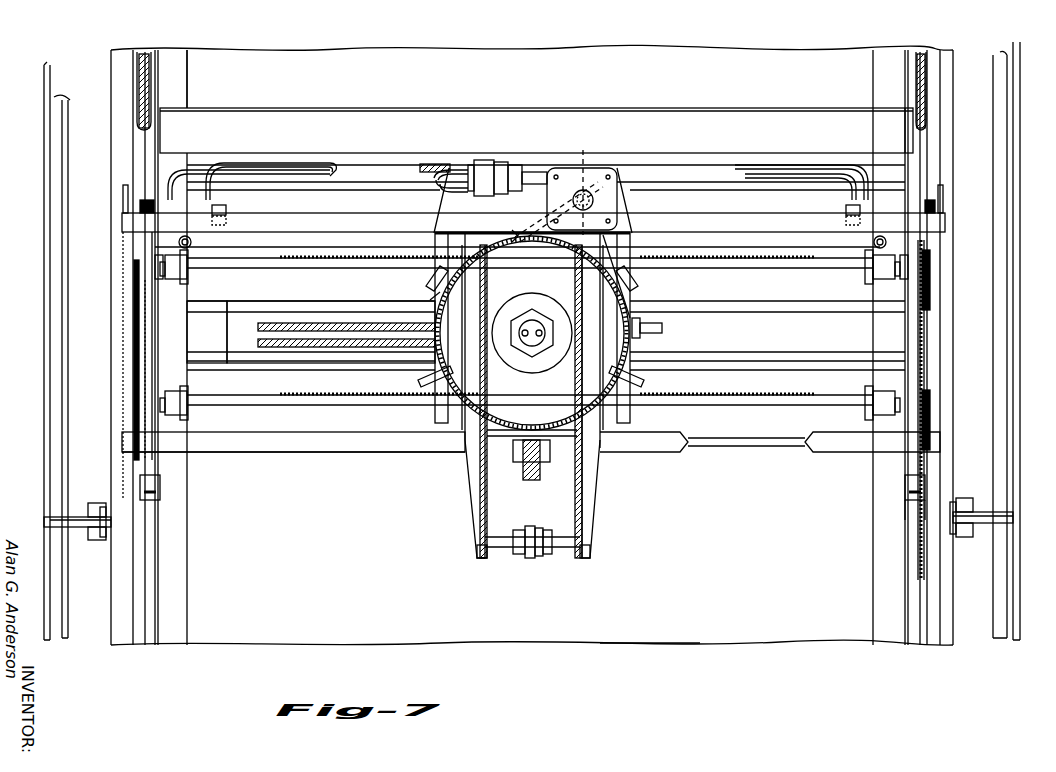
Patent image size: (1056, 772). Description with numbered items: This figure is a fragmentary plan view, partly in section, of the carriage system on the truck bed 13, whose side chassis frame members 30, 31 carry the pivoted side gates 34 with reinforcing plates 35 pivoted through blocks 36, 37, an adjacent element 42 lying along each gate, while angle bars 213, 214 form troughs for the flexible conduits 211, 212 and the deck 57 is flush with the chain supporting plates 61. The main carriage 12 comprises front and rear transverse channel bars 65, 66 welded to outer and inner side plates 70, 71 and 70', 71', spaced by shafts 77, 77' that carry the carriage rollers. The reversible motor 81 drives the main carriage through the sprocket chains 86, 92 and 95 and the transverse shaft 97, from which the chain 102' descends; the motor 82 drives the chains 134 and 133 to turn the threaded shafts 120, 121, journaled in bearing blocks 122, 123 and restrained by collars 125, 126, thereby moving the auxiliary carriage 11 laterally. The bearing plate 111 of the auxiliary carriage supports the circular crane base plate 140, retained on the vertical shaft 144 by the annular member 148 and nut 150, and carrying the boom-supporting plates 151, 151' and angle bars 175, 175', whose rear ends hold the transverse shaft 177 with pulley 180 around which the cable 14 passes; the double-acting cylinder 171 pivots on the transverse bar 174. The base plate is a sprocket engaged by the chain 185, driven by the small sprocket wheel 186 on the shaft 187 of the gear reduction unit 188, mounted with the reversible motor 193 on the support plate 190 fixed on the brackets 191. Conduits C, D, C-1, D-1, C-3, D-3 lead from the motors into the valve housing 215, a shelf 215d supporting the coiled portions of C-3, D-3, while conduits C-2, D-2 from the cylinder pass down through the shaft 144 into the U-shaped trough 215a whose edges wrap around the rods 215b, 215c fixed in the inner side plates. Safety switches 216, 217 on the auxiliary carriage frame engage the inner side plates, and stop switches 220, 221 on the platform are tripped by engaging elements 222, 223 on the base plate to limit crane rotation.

The secondary or auxiliary carriage 11 is at (640, 422).
The main or primary carriage 12 is at (380, 452).
The truck bed or trailer bed 13 is at (650, 650).
The cable 14 is at (534, 556).
The side chassis frame member 30 is at (111, 62).
The side chassis frame member 31 is at (947, 50).
The side panel or side gate 34 is at (44, 80).
The reinforcing plate 35 is at (48, 530).
The block 36 is at (96, 503).
The block 37 is at (102, 540).
The rail 42 is at (64, 100).
The platform or deck 57 is at (495, 50).
The chain supporting plate 61 is at (187, 50).
The front transverse channel bar or auxiliary carriage track 65 is at (318, 206).
The rear transverse channel bar or auxiliary carriage track 66 is at (318, 454).
The outer main carriage side plate 70 is at (513, 208).
The outer main carriage side plate 70' is at (956, 197).
The inner main carriage side plate 71 is at (170, 277).
The inner main carriage side plate 71' is at (897, 293).
The shaft or bar 77 is at (532, 498).
The shaft or bar 77' is at (902, 512).
The reversible motor 81 is at (226, 208).
The reversible motor 82 is at (846, 208).
The endless sprocket chain 86 is at (135, 248).
The endless sprocket chain 92 is at (134, 302).
The endless sprocket chain 95 is at (150, 345).
The transverse shaft 97 is at (714, 446).
The endless sprocket chain 102' is at (958, 420).
The bearing plate 111 is at (606, 444).
The front transverse threaded shaft or screw 120 is at (362, 256).
The rear transverse threaded shaft or screw 121 is at (278, 395).
The bearing block 122 is at (178, 279).
The bearing block 123 is at (176, 391).
The thrust washer, bearing or collar 125 is at (194, 258).
The thrust washer, bearing or collar 126 is at (188, 410).
The endless sprocket chain 133 is at (918, 344).
The endless sprocket chain 134 is at (930, 262).
The circular crane base plate 140 is at (512, 226).
The vertically disposed axle or shaft 144 is at (544, 316).
The peripherally flanged skirt or annular member 148 is at (510, 360).
The nut 150 is at (522, 316).
The boom-supporting plate 151 is at (532, 333).
The boom-supporting plate 151' is at (584, 276).
The double-acting cylinder 171 is at (532, 480).
The transverse bar 174 is at (556, 470).
The frame member 175 is at (455, 395).
The frame member 175' is at (608, 395).
The transverse shaft 177 is at (488, 560).
The pulley 180 is at (518, 556).
The endless sprocket chain 185 is at (524, 220).
The sprocket wheel 186 is at (585, 150).
The shaft 187 is at (617, 198).
The gear reduction unit 188 is at (612, 170).
The motor support plate 190 is at (444, 205).
The bracket 191 is at (435, 244).
The reversible motor 193 is at (488, 160).
The flexible conduit or pipe 211 is at (142, 52).
The flexible conduit or pipe 212 is at (921, 52).
The angle bar 213 is at (152, 52).
The angle bar 214 is at (916, 52).
The housing 215 is at (420, 108).
The U-shaped trough 215a is at (318, 372).
The supporting rod 215b is at (226, 308).
The supporting rod 215c is at (260, 364).
The shelf 215d is at (312, 200).
The safety switch 216 is at (664, 328).
The safety switch 217 is at (422, 302).
The safety stop switch 220 is at (640, 288).
The safety stop switch 221 is at (426, 285).
The switch engaging element 222 is at (418, 384).
The switch engaging element 223 is at (644, 381).
The pipe or conduit C is at (298, 160).
The pipe or conduit D is at (208, 170).
The pipe or conduit C-1 is at (750, 160).
The pipe or conduit D-1 is at (800, 166).
The pipe or conduit C-2 is at (258, 344).
The pipe or conduit D-2 is at (258, 328).
The pipe or conduit C-3 is at (462, 160).
The pipe or conduit D-3 is at (428, 164).